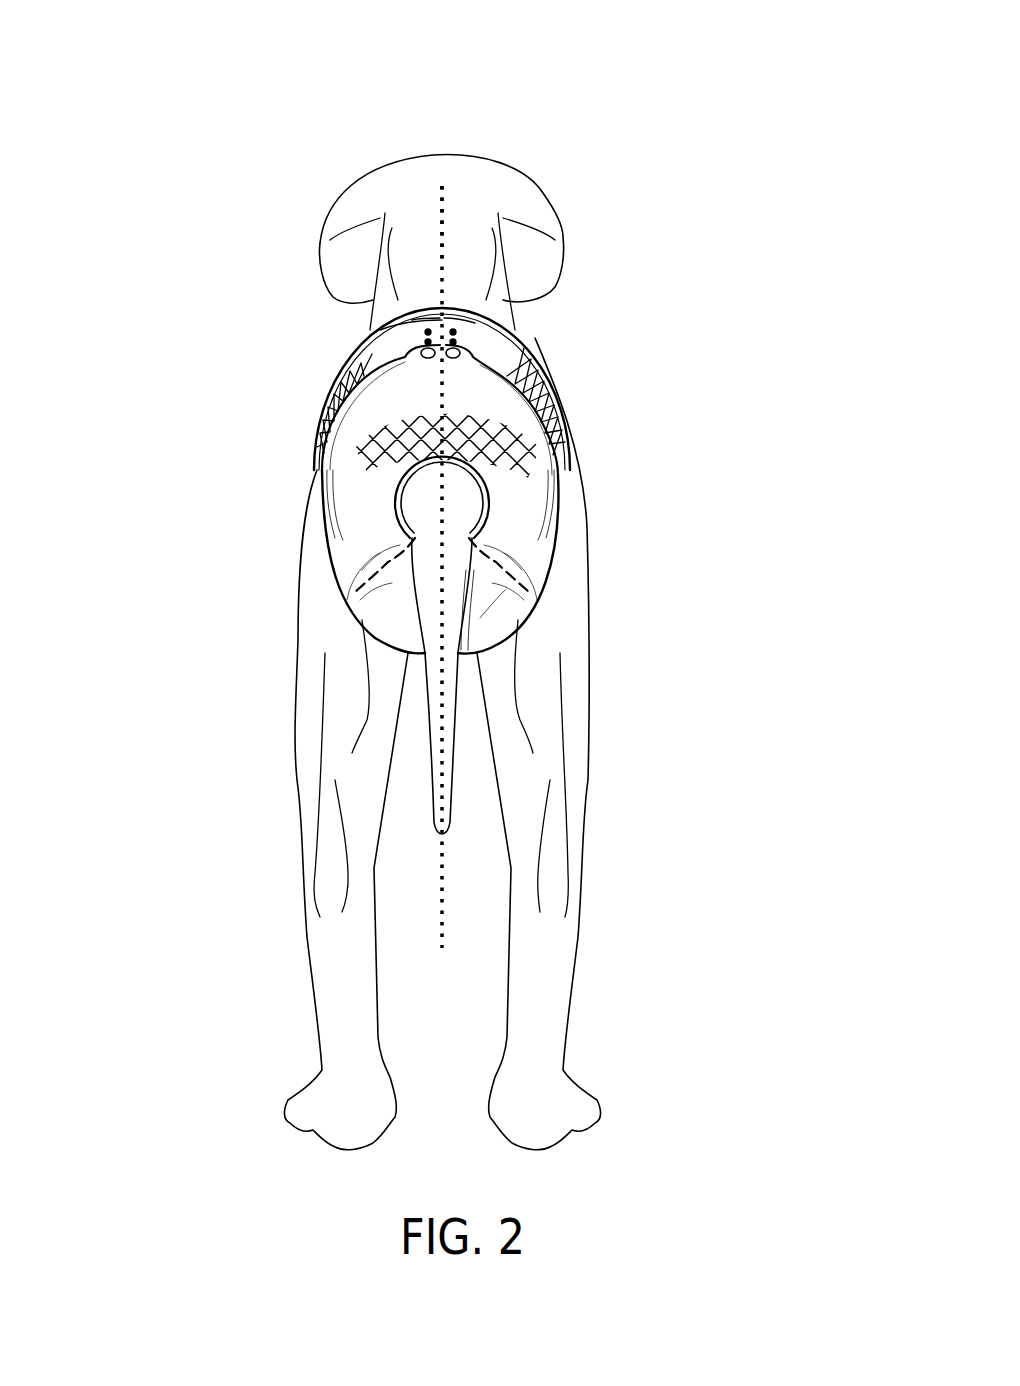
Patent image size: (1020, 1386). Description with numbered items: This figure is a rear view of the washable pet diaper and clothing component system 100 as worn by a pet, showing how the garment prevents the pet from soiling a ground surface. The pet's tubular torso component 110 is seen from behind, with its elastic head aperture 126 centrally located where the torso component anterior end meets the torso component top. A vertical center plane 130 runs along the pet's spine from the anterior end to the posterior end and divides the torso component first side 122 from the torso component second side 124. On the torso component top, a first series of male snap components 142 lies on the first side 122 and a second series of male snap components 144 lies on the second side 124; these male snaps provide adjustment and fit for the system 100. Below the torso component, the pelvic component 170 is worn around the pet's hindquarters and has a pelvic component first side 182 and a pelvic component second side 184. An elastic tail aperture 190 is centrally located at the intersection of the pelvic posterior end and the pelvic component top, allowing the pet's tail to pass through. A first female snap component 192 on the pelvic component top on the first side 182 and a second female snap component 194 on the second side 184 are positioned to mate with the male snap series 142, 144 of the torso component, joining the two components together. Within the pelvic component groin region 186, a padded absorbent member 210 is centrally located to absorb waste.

The washable pet diaper and clothing component system 100 is at (212, 99).
The tubular torso component 110 is at (364, 352).
The torso component first side 122 is at (326, 412).
The torso component second side 124 is at (547, 383).
The elastic head aperture 126 is at (406, 327).
The vertical center plane 130 is at (445, 248).
The first series of male snap components 142 is at (422, 308).
The second series of male snap components 144 is at (472, 323).
The pelvic component 170 is at (526, 433).
The pelvic component first side 182 is at (365, 493).
The pelvic component second side 184 is at (538, 523).
The pelvic component groin region 186 is at (478, 632).
The elastic tail aperture 190 is at (490, 502).
The first female snap component 192 is at (405, 349).
The second female snap component 194 is at (458, 352).
The padded absorbent member 210 is at (407, 587).
The element pet is at (440, 173).